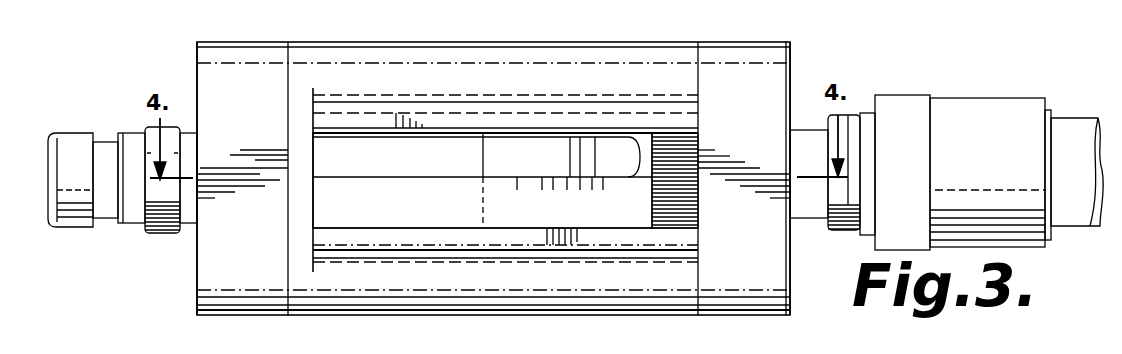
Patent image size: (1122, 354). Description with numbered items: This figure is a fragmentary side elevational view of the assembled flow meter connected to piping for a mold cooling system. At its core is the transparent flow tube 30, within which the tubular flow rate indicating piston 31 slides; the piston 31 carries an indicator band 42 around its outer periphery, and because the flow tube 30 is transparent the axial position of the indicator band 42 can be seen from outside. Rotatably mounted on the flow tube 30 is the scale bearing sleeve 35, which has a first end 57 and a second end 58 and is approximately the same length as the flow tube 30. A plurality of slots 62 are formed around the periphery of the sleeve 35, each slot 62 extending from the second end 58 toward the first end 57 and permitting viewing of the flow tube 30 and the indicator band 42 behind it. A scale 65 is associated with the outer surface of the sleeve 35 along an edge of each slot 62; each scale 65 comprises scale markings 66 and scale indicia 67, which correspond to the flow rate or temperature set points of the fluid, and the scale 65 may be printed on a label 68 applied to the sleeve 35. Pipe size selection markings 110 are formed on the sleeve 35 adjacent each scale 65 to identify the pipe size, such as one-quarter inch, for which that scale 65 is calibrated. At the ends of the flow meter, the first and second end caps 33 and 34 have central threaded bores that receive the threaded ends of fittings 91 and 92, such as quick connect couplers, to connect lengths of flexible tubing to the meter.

The flow tube 30 is at (357, 150).
The flow rate indicating piston 31 is at (488, 148).
The first end cap 33 is at (790, 72).
The second end cap 34 is at (197, 260).
The scale bearing sleeve 35 is at (640, 137).
The indicator band 42 is at (558, 147).
The first end of sleeve 57 is at (678, 137).
The second end of sleeve 58 is at (338, 133).
The slot 62 is at (388, 146).
The scale 65 is at (497, 204).
The scale markings 66 is at (546, 178).
The scale indicia 67 is at (578, 210).
The label 68 is at (527, 207).
The fitting 91 is at (957, 100).
The fitting 92 is at (75, 227).
The pipe size selection markings 110 is at (327, 220).